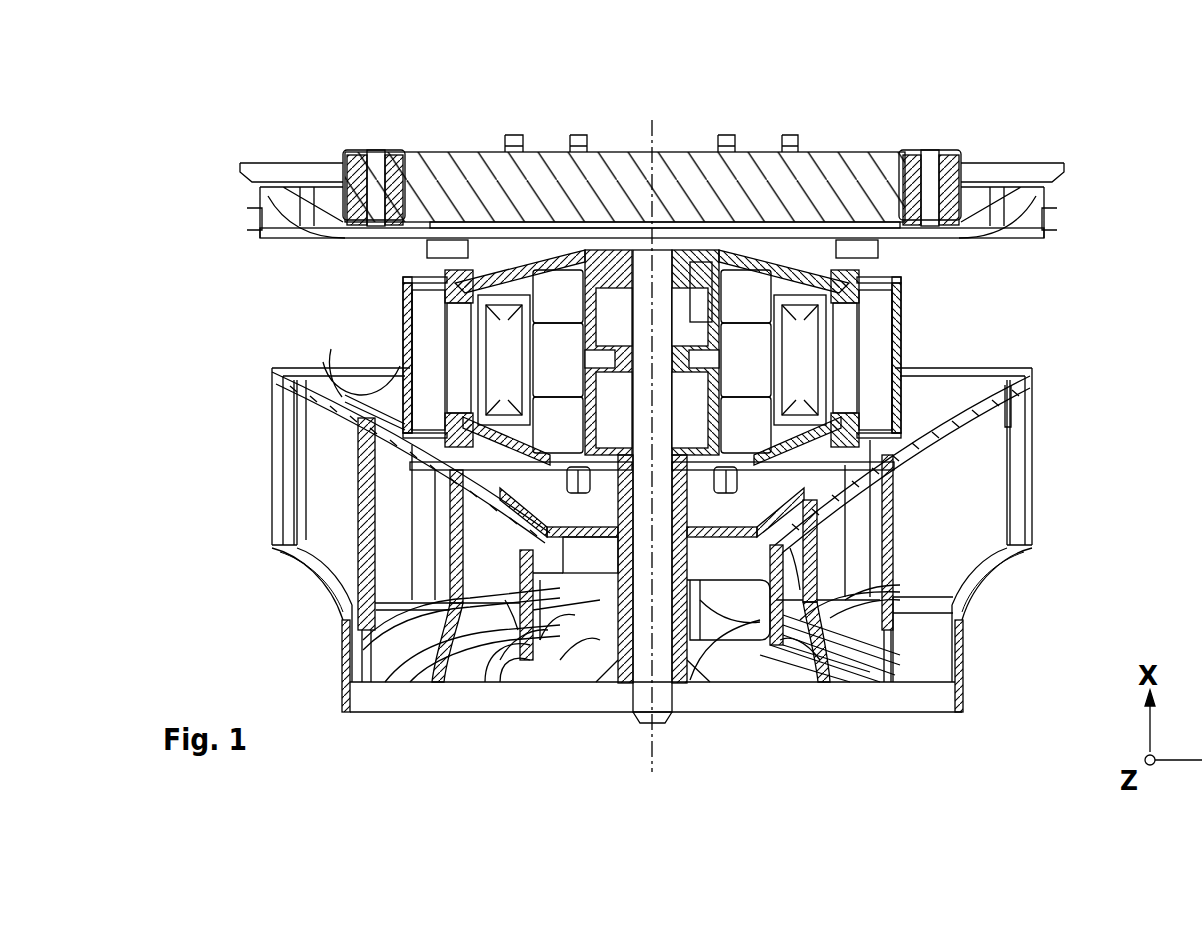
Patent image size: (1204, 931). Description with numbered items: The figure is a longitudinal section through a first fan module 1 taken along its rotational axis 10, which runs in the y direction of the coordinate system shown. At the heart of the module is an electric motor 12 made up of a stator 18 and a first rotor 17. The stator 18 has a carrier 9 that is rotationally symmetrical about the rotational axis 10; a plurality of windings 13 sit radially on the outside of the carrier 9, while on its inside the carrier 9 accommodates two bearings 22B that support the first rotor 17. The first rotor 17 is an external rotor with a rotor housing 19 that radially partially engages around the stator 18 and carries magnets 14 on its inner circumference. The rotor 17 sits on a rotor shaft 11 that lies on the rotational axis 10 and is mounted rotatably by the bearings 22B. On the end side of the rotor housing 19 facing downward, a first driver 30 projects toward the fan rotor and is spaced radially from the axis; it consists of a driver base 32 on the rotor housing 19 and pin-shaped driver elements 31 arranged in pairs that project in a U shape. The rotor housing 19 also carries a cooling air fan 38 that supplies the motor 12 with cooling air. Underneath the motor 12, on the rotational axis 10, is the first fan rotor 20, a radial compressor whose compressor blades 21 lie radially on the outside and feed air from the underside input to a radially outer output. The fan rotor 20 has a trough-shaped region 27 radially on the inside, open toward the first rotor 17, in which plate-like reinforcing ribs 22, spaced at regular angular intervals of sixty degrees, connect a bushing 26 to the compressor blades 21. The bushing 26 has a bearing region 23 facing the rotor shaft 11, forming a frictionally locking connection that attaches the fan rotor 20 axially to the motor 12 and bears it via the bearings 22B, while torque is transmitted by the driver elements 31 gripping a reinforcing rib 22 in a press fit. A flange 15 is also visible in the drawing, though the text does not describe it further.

The first fan module 1 is at (1076, 105).
The carrier 9 is at (878, 278).
The rotational axis 10 is at (655, 752).
The rotor shaft 11 is at (641, 694).
The electric motor 12 is at (1036, 287).
The windings 13 is at (425, 325).
The magnets 14 is at (420, 333).
The mounting flange 15 is at (398, 347).
The first rotor 17 is at (954, 360).
The stator 18 is at (788, 266).
The rotor housing 19 is at (1005, 400).
The first fan rotor 20 is at (978, 735).
The compressor blades 21 is at (910, 688).
The reinforcing ribs 22 is at (592, 640).
The bearings 22B is at (714, 262).
The bearing region 23 is at (636, 684).
The bushing 26 is at (700, 680).
The trough-shaped region 27 is at (800, 688).
The first driver 30 is at (590, 640).
The driver elements 31 is at (568, 640).
The driver base 32 is at (548, 640).
The cooling air fan 38 is at (795, 556).